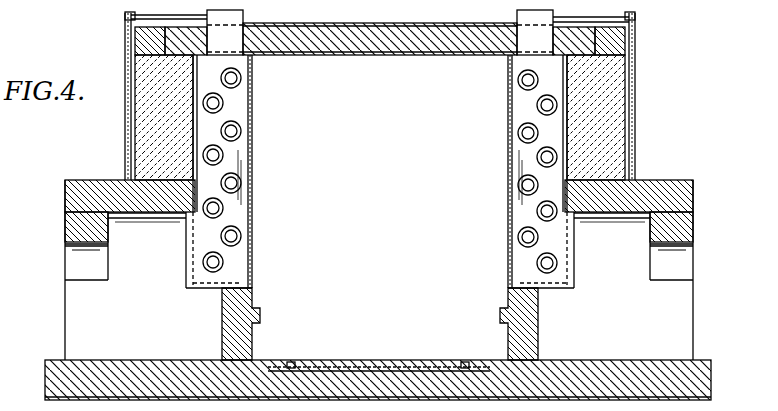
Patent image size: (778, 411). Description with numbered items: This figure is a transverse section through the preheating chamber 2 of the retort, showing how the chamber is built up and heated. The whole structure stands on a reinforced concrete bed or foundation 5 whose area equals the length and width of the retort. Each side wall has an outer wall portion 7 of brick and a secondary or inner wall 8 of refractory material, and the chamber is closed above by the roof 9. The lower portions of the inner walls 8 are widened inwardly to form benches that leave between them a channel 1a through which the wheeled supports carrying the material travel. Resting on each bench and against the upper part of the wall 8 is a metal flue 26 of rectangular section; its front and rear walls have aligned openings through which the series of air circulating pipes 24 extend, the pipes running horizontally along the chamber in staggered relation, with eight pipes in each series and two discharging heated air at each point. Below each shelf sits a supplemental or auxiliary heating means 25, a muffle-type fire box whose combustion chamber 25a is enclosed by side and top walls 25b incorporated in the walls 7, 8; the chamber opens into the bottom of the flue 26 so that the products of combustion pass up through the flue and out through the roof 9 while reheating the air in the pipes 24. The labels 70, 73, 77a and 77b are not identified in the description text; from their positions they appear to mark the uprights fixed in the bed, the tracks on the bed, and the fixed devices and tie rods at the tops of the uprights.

The channel 1a is at (383, 321).
The preheating chamber 2 is at (377, 233).
The bed or foundation 5 is at (166, 363).
The outer wall portion 7 is at (140, 157).
The secondary or inner wall 8 is at (152, 133).
The roof 9 is at (349, 55).
The air circulating pipes 24 is at (222, 209).
The supplemental or auxiliary heating means 25 is at (395, 246).
The combustion chamber 25a is at (425, 324).
The side and top walls 25b is at (90, 192).
The flue 26 is at (256, 164).
The outer casing 70 is at (125, 115).
The fitting 73 is at (300, 357).
The cover block 77a is at (207, 12).
The cover cap 77b is at (140, 13).